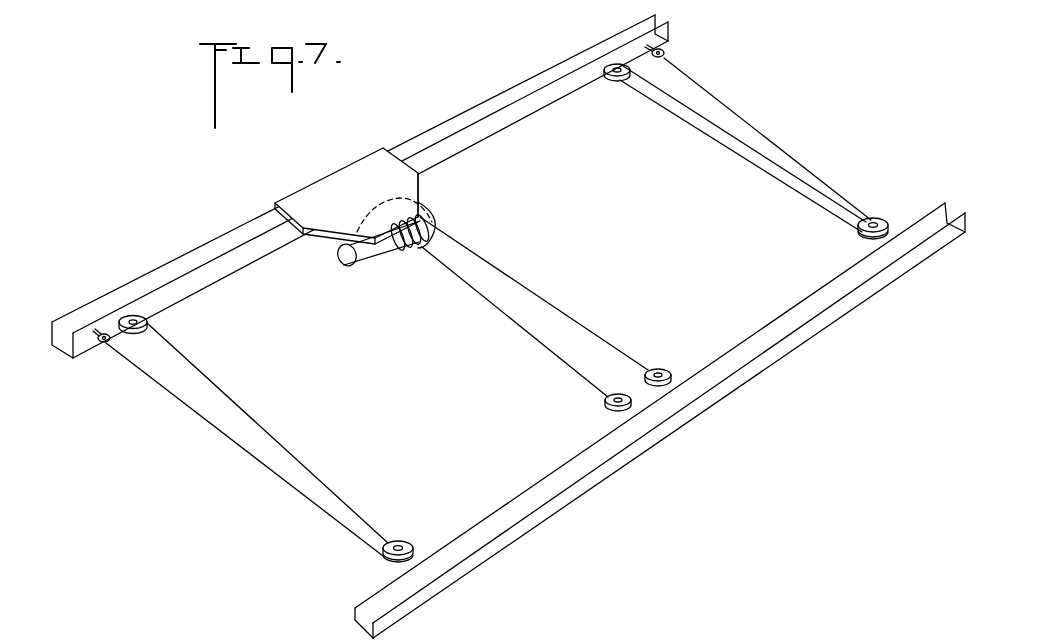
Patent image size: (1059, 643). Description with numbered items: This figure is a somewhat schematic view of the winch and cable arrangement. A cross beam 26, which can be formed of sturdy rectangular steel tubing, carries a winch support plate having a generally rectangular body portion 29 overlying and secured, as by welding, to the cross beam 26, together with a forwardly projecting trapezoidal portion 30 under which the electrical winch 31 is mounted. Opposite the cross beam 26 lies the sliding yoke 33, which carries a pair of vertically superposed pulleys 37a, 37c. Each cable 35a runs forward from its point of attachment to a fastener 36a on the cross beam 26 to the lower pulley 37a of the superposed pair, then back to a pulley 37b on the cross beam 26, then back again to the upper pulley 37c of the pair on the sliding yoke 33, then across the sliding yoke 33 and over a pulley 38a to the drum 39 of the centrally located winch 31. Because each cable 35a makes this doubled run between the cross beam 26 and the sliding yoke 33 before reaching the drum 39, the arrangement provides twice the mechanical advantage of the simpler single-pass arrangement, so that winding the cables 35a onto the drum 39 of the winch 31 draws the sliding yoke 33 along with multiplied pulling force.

The cross beam 26 is at (533, 78).
The rectangular body portion 29 is at (352, 170).
The trapezoidal portion 30 is at (412, 190).
The electrical winch 31 is at (382, 262).
The sliding yoke 33 is at (640, 453).
The cable 35a is at (220, 432).
The fastener 36a is at (104, 346).
The lower pulley 37a is at (150, 322).
The pulley 37b is at (612, 80).
The upper pulley 37c is at (868, 218).
The pulley 38a is at (603, 400).
The drum 39 is at (437, 231).